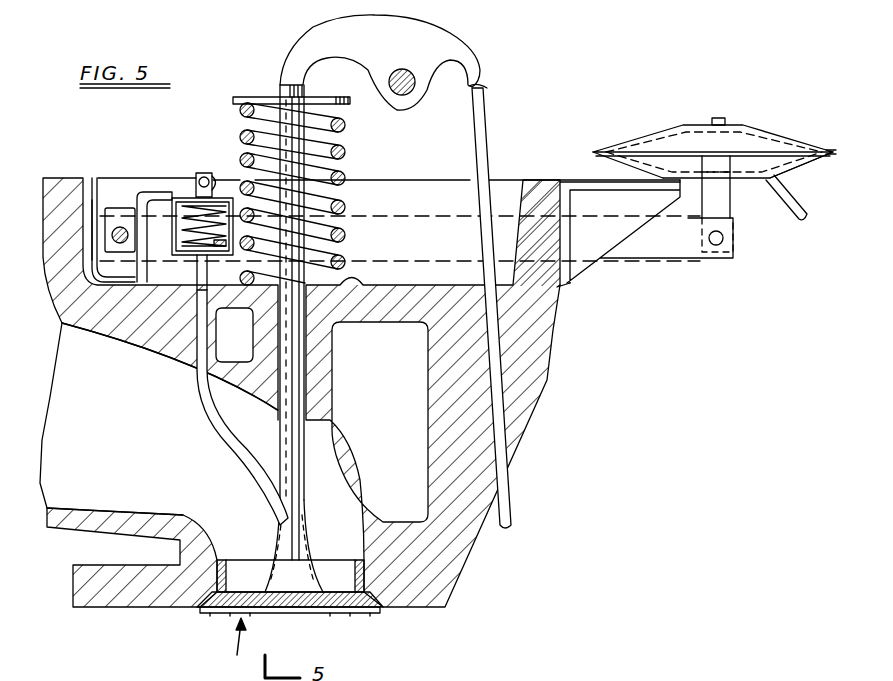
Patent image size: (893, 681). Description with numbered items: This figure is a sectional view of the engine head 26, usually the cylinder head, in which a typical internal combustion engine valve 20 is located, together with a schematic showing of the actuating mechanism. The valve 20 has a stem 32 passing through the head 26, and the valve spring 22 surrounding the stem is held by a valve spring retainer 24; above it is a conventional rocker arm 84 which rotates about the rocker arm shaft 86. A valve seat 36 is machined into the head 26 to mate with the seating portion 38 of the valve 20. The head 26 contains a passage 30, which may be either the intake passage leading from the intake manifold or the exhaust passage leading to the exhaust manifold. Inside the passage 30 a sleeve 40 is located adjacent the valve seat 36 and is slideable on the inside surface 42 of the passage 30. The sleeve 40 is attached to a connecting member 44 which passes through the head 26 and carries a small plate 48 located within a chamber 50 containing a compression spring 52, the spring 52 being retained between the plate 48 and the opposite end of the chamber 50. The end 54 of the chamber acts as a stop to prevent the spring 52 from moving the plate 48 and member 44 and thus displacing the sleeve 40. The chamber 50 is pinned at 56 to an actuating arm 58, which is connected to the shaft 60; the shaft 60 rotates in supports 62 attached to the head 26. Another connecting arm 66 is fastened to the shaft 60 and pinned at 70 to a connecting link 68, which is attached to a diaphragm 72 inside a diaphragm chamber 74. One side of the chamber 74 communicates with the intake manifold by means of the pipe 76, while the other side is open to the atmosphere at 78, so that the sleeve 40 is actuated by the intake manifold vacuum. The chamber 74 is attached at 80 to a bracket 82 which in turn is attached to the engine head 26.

The engine valve 20 is at (231, 647).
The valve spring 22 is at (243, 137).
The valve spring retainer 24 is at (233, 100).
The engine head 26 is at (515, 456).
The passage 30 is at (162, 419).
The valve stem 32 is at (279, 88).
The valve seat 36 is at (205, 610).
The seating portion 38 is at (262, 612).
The sleeve 40 is at (225, 565).
The inside surface 42 is at (357, 598).
The connecting member 44 is at (213, 420).
The plate 48 is at (228, 240).
The chamber 50 is at (172, 197).
The compression spring 52 is at (180, 218).
The end of the chamber 54 is at (190, 258).
The pin 56 is at (207, 181).
The actuating arm 58 is at (172, 180).
The shaft 60 is at (119, 228).
The supports 62 is at (97, 275).
The connecting arm 66 is at (672, 248).
The connecting link 68 is at (723, 205).
The pin 70 is at (717, 243).
The diaphragm 72 is at (773, 150).
The diaphragm chamber 74 is at (800, 170).
The pipe 76 is at (796, 218).
The atmospheric opening 78 is at (721, 118).
The attachment 80 is at (657, 178).
The bracket 82 is at (573, 272).
The rocker arm 84 is at (437, 52).
The rocker arm shaft 86 is at (398, 96).